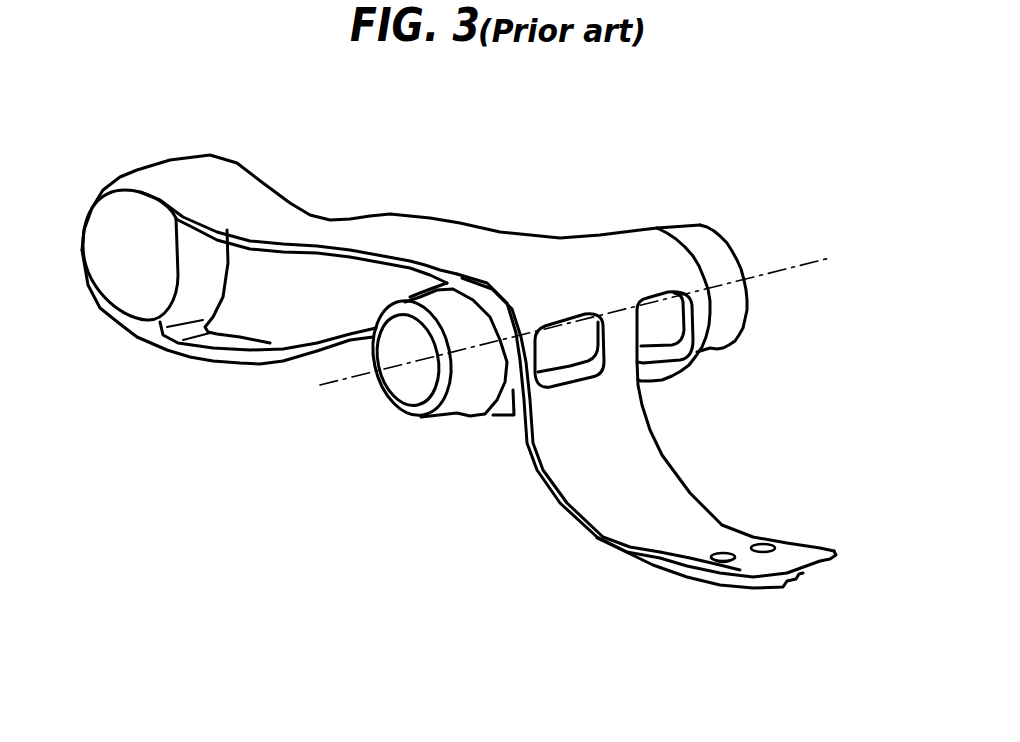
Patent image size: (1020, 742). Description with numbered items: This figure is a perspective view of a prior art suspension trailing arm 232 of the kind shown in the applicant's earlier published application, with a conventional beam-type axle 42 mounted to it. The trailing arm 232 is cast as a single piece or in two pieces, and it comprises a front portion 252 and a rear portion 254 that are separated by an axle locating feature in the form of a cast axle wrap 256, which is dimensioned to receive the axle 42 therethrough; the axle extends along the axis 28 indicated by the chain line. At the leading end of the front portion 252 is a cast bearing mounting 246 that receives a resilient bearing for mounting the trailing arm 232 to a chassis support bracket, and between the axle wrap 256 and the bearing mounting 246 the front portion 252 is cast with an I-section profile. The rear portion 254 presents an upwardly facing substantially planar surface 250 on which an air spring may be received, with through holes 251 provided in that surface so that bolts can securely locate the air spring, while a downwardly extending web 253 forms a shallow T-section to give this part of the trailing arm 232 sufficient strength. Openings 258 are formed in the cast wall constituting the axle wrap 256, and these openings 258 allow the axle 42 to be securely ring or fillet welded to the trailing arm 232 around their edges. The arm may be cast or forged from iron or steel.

The trailing arm 232 is at (408, 214).
The bearing mounting 246 is at (130, 203).
The front portion 252 is at (178, 355).
The rear portion 254 is at (543, 483).
The substantially planar surface 250 is at (727, 532).
The through holes 251 is at (780, 543).
The downwardly extending web 253 is at (637, 570).
The openings 258 is at (580, 384).
The beam-type axle 42 is at (728, 241).
The axle wrap 256 is at (652, 246).
The pivot axis 28 is at (842, 253).